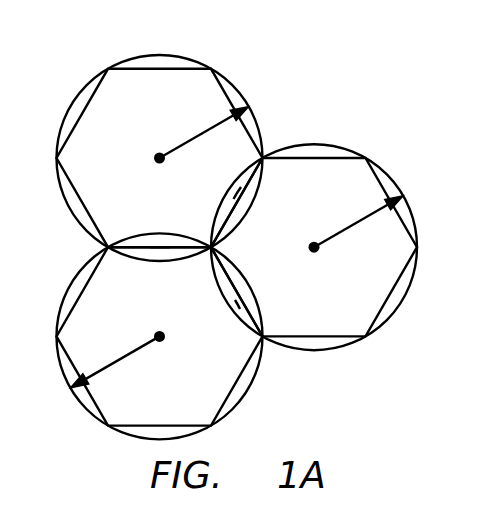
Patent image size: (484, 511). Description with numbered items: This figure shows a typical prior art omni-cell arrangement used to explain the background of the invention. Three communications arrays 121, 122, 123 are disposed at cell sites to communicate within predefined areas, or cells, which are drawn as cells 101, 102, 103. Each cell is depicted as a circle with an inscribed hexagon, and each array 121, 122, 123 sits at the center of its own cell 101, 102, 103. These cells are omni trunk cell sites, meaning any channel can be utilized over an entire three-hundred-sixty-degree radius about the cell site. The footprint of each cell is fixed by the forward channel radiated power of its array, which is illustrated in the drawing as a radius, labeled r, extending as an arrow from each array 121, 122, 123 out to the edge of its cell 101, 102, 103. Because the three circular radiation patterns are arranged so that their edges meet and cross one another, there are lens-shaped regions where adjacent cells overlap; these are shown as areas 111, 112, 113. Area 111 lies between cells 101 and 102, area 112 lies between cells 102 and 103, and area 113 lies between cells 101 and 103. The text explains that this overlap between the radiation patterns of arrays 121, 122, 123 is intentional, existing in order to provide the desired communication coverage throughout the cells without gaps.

The cell 101 is at (160, 69).
The cell 102 is at (313, 158).
The cell 103 is at (240, 382).
The overlap area 111 is at (233, 198).
The overlap area 112 is at (235, 300).
The overlap area 113 is at (158, 246).
The communications array 121 is at (158, 153).
The communications array 122 is at (315, 255).
The communications array 123 is at (157, 328).